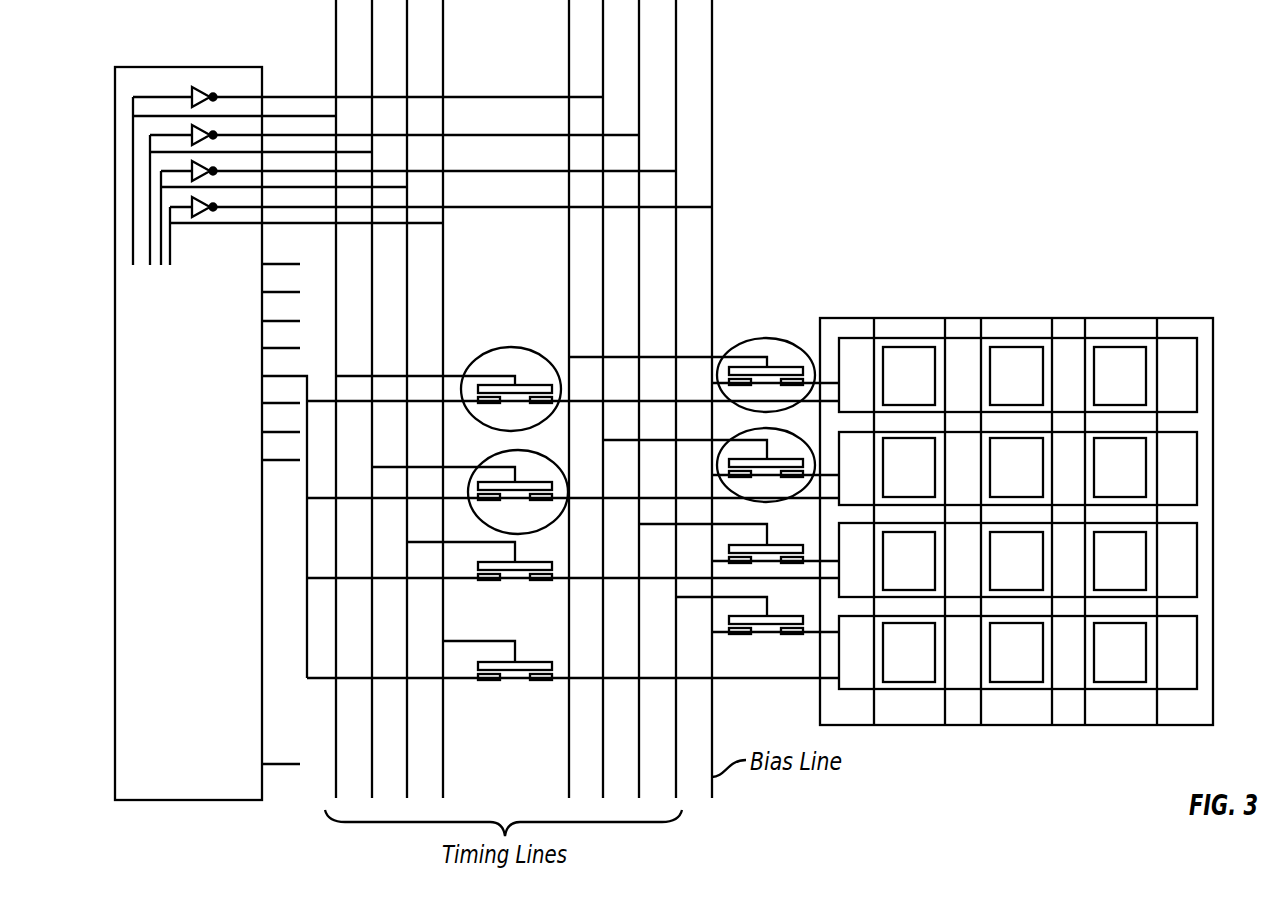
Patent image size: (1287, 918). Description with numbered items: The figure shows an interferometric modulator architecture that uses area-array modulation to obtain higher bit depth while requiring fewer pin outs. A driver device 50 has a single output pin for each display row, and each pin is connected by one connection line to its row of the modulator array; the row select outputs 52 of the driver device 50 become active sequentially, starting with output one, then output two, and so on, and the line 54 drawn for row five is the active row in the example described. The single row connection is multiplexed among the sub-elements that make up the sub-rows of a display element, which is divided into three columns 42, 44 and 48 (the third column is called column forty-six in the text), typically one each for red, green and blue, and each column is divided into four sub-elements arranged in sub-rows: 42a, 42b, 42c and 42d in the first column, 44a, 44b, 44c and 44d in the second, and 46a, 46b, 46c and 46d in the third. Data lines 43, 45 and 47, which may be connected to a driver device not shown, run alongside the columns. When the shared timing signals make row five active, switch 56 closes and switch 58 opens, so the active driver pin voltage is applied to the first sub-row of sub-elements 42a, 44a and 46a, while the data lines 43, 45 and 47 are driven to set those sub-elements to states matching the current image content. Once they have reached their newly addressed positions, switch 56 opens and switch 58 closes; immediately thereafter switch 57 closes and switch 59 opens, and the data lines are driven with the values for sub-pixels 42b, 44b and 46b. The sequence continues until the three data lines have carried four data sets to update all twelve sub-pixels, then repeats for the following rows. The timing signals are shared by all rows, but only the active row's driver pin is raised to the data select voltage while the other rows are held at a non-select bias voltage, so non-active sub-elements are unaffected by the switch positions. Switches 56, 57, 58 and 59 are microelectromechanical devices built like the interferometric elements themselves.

The driver device 50 is at (155, 66).
The shift register stages 52 is at (268, 262).
The row select output 54 is at (268, 375).
The switch 56 is at (512, 347).
The switch 57 is at (498, 450).
The switch 58 is at (767, 338).
The switch 59 is at (762, 429).
The column 42 is at (910, 337).
The data line 43 is at (917, 316).
The column 44 is at (1013, 337).
The data line 45 is at (1023, 316).
The data line 47 is at (1128, 316).
The third column line 48 is at (1117, 337).
The sub-element 42a is at (909, 376).
The sub-element 42b is at (909, 467).
The sub-element 42c is at (909, 561).
The pixel 42d is at (909, 652).
The sub-element 44a is at (1016, 376).
The sub-element 44b is at (1016, 467).
The pixel 44c is at (1016, 561).
The pixel 44d is at (1016, 652).
The sub-element 46a is at (1120, 376).
The sub-element 46b is at (1120, 467).
The pixel 46c is at (1120, 561).
The pixel 46d is at (1120, 652).